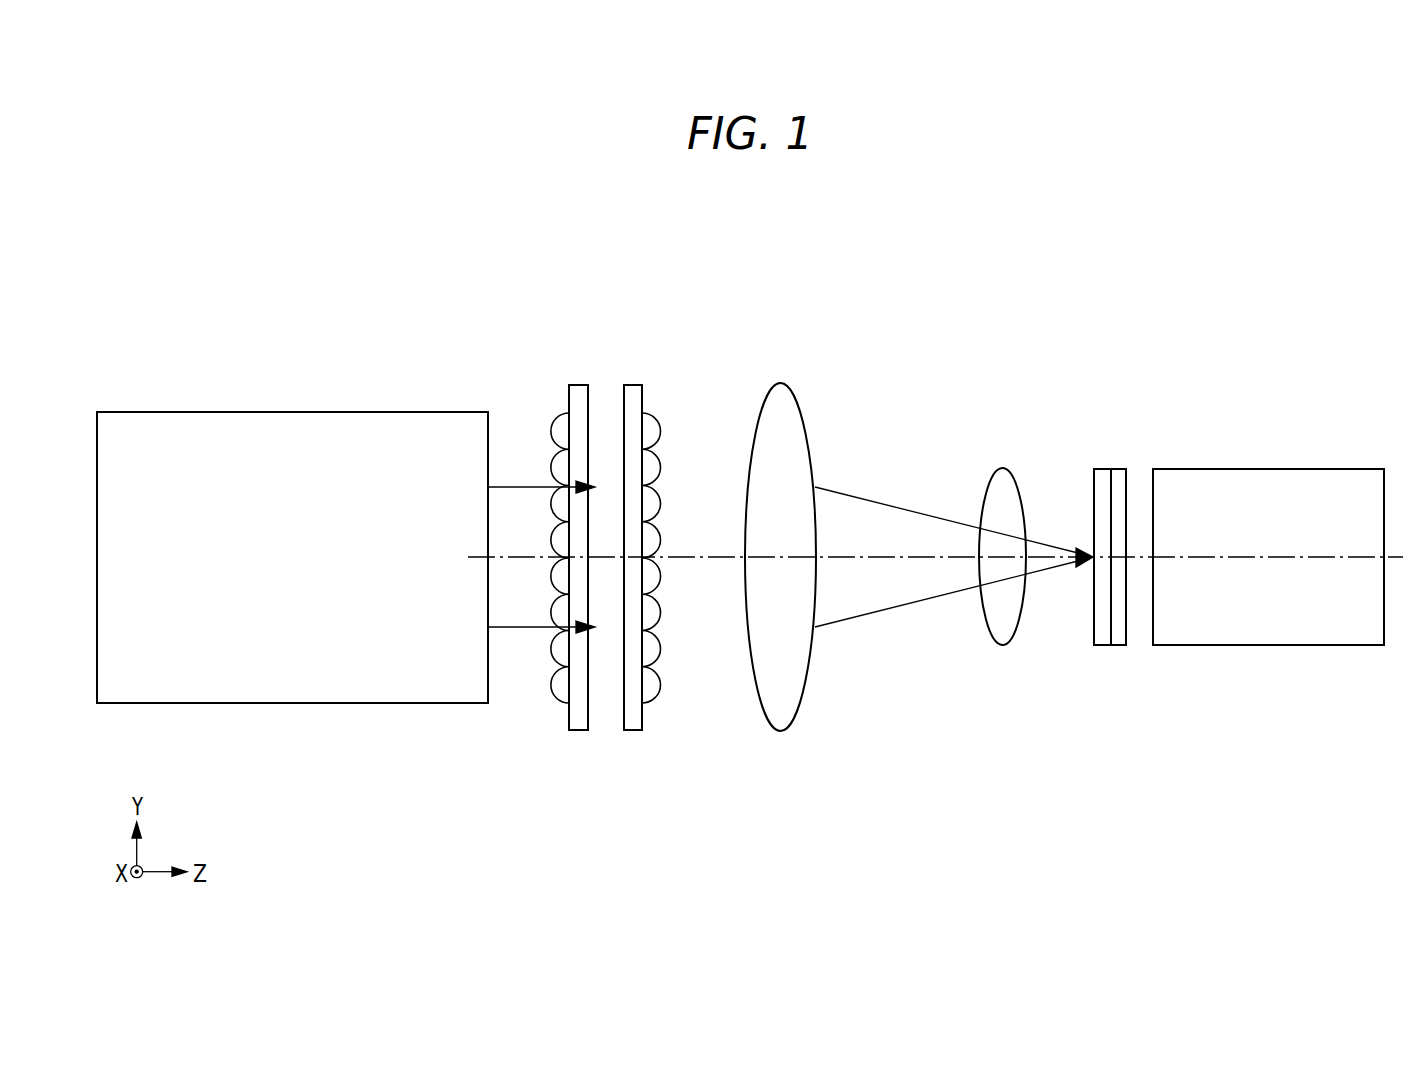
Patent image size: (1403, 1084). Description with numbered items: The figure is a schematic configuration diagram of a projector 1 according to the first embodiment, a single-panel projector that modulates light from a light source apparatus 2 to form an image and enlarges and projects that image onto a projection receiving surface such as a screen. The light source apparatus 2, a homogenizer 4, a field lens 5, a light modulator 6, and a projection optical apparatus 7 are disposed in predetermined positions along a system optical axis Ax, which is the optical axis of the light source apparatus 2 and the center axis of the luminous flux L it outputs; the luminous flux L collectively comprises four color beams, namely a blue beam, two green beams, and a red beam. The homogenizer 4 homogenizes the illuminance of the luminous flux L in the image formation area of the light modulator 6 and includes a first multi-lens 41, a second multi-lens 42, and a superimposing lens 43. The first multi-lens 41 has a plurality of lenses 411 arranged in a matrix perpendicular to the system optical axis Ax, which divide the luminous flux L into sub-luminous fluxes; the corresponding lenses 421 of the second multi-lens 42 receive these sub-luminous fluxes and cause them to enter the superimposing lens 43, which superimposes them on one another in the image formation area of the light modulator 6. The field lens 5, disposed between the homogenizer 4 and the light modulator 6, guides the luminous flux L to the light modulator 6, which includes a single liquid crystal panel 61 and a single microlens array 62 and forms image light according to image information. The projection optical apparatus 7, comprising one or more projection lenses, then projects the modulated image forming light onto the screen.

The projector 1 is at (1332, 247).
The light source apparatus 2 is at (385, 410).
The homogenizer 4 is at (805, 282).
The first multi-lens 41 is at (562, 538).
The lenses 411 is at (558, 685).
The second multi-lens 42 is at (660, 538).
The lenses 421 is at (657, 682).
The superimposing lens 43 is at (777, 383).
The field lens 5 is at (997, 470).
The light modulator 6 is at (1120, 485).
The liquid crystal panel 61 is at (1143, 510).
The microlens array 62 is at (1103, 468).
The projection optical apparatus 7 is at (1319, 468).
The luminous flux L is at (510, 620).
The system optical axis Ax is at (1203, 557).